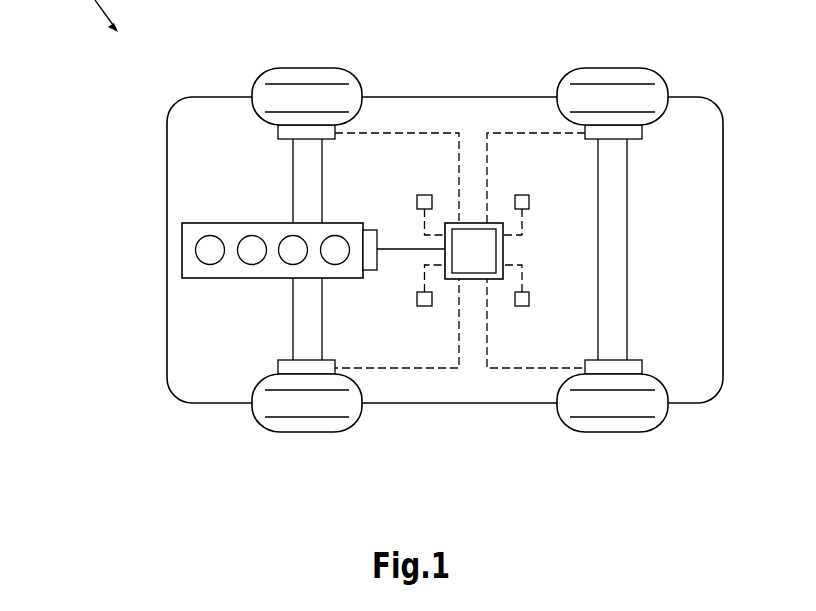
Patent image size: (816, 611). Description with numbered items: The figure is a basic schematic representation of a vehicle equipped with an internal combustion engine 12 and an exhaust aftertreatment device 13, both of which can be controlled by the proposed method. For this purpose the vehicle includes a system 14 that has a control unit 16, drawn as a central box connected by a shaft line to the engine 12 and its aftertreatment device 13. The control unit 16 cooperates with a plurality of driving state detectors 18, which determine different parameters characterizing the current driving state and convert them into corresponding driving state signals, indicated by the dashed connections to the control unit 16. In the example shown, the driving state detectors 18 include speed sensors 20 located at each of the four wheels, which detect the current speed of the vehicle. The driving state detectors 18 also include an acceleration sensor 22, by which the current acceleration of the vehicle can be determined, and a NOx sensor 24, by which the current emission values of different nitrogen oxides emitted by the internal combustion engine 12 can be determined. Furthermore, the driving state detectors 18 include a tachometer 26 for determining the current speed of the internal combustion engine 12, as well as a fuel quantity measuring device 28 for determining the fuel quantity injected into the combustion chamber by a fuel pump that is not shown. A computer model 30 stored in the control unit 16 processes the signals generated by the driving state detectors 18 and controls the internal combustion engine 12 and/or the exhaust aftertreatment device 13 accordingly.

The system 14 is at (422, 68).
The internal combustion engine 12 is at (180, 249).
The exhaust aftertreatment device 13 is at (368, 272).
The control unit 16 is at (503, 248).
The computer model 30 is at (465, 278).
The driving state detectors 18 is at (448, 250).
The speed sensors 20 is at (277, 137).
The acceleration sensor 22 is at (522, 192).
The NOx sensor 24 is at (522, 308).
The tachometer 26 is at (427, 192).
The fuel quantity measuring device 28 is at (423, 308).